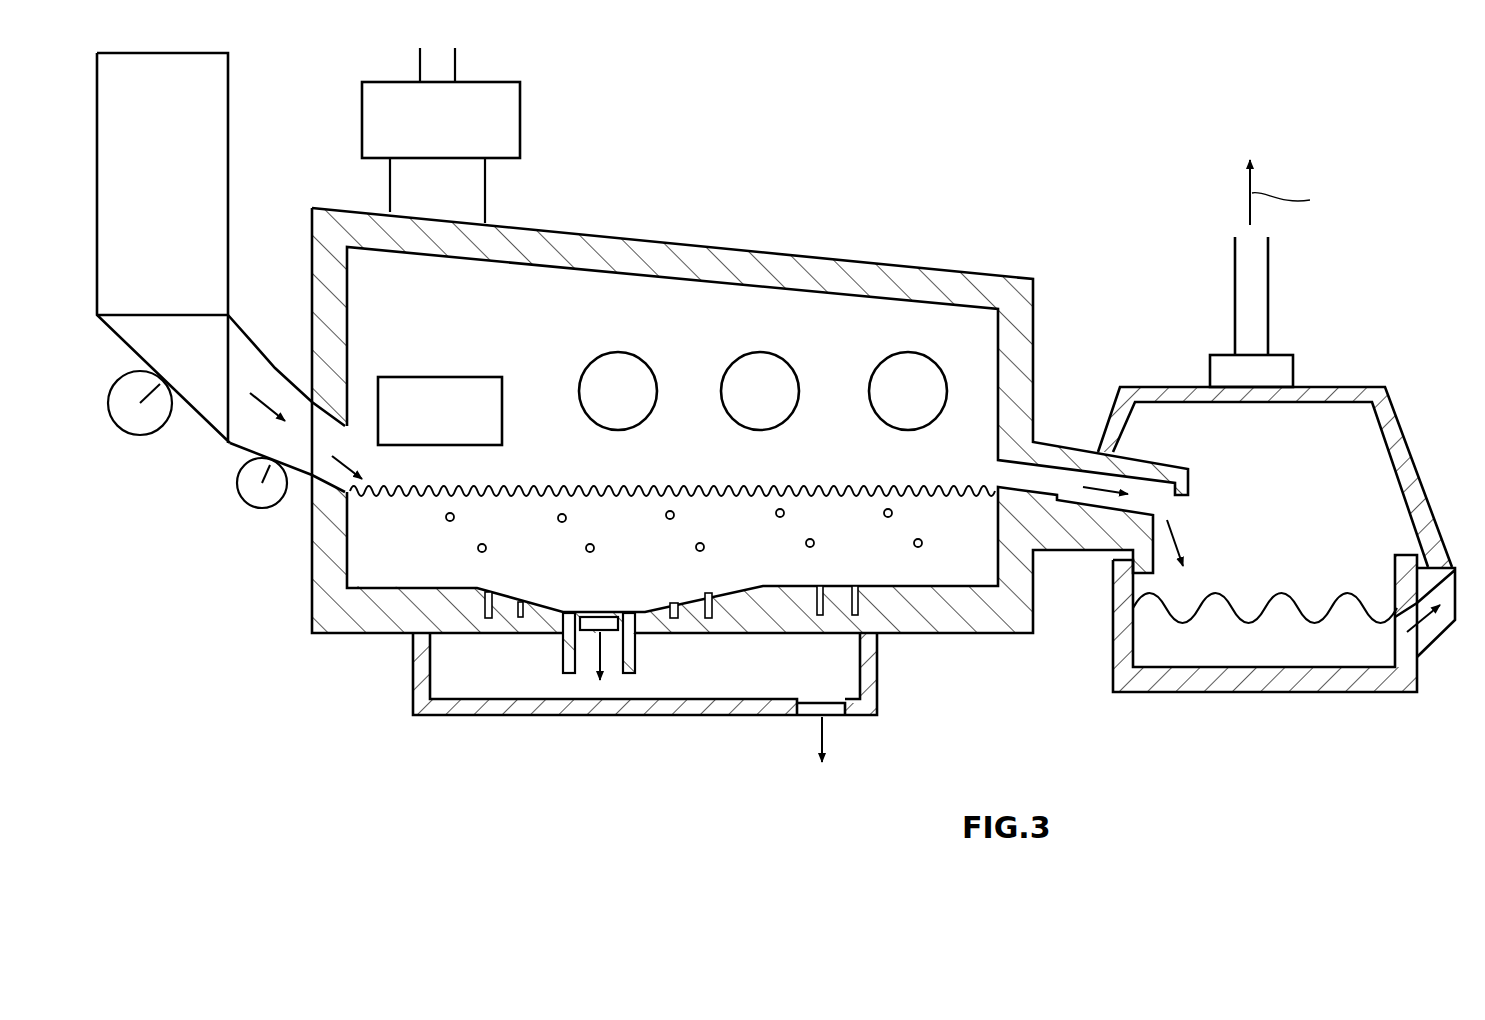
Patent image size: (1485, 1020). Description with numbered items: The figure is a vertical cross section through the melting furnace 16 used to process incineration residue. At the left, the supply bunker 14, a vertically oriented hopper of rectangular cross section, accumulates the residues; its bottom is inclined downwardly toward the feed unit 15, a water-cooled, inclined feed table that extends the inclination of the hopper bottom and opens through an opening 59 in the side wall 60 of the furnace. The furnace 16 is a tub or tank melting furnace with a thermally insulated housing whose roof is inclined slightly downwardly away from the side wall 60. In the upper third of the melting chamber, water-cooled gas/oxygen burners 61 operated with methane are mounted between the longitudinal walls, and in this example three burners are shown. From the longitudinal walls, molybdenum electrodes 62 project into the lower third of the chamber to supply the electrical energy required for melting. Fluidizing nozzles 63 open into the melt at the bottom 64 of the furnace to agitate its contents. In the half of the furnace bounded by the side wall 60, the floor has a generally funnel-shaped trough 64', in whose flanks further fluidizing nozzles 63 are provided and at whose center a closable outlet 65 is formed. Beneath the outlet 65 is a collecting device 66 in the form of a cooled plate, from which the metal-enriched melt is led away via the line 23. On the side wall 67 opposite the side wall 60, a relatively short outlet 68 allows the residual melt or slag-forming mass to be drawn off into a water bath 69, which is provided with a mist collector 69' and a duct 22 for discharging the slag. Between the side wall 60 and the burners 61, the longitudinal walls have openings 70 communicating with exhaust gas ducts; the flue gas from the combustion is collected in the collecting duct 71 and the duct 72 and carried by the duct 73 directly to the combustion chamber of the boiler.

The supply bunker 14 is at (213, 142).
The feed unit 15 is at (268, 378).
The melting furnace 16 is at (553, 317).
The line 22 is at (1428, 617).
The line 23 is at (822, 723).
The opening 59 is at (325, 452).
The side wall 60 is at (322, 560).
The gas/oxygen burners 61 is at (628, 405).
The molybdenum electrodes 62 is at (448, 521).
The fluidizing nozzles 63 is at (708, 595).
The bottom 64 is at (391, 653).
The funnel-shaped trough 64' is at (515, 575).
The closable outlet 65 is at (560, 637).
The collecting device 66 is at (613, 708).
The side wall 67 is at (1035, 308).
The outlet 68 is at (1040, 472).
The water bath 69 is at (1289, 560).
The mist collector 69' is at (1275, 363).
The openings 70 is at (452, 423).
The collecting duct 71 is at (462, 198).
The duct 72 is at (502, 125).
The duct 73 is at (447, 62).